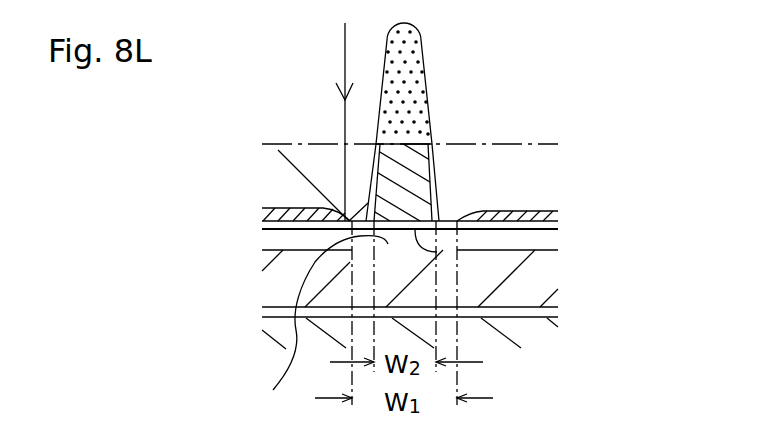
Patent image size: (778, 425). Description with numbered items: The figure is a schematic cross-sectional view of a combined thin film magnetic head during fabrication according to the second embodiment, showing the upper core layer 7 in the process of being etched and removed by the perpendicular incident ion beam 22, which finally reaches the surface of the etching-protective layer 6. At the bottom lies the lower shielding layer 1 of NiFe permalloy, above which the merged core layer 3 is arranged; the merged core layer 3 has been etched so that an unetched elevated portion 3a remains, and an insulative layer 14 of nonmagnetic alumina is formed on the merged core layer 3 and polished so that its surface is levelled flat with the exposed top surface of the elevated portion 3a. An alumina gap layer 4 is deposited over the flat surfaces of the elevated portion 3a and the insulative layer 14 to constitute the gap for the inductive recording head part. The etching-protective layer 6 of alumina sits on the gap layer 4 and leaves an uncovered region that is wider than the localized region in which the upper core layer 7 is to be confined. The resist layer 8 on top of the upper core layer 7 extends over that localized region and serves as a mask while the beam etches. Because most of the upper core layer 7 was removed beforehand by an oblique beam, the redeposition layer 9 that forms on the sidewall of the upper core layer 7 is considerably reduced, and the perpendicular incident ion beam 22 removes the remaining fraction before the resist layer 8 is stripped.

The lower shielding layer 1 is at (540, 336).
The merged core layer 3 is at (540, 278).
The elevated portion 3a is at (308, 321).
The gap layer 4 is at (558, 226).
The etching-protective layer 6 is at (548, 211).
The upper core layer 7 is at (415, 146).
The resist layer 8 is at (415, 95).
The redeposition layer 9 is at (437, 178).
The insulative layer 14 is at (552, 242).
The perpendicular incident ion beam 22 is at (343, 62).